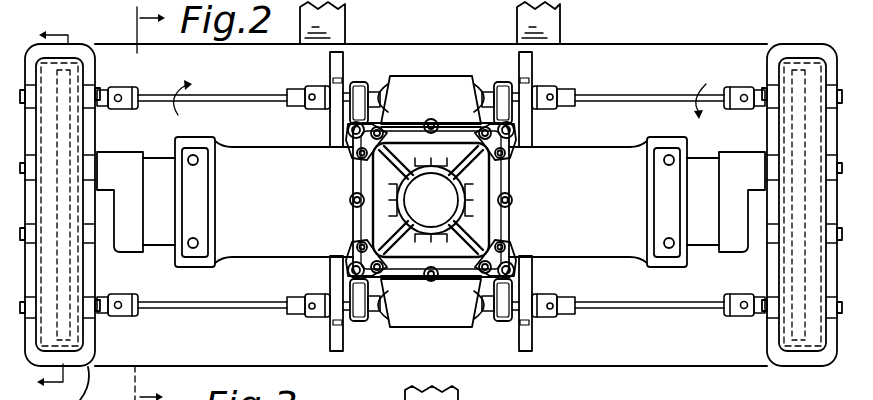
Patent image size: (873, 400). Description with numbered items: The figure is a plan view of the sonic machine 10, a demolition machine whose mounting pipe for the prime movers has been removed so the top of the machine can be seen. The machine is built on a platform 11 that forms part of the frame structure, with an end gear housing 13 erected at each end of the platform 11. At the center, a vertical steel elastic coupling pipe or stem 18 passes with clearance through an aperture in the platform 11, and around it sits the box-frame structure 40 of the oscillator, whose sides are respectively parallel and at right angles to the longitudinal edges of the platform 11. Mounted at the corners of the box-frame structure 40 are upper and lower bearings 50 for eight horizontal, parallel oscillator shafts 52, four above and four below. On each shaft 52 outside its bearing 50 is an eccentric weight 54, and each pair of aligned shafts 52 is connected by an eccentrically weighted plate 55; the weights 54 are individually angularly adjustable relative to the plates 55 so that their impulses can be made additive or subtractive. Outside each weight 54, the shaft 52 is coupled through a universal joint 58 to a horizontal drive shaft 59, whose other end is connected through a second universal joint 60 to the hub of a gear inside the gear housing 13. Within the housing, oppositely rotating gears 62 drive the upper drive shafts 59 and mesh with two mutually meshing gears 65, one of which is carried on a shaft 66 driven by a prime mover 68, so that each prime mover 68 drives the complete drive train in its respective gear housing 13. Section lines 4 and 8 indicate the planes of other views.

The section line 4- 4 is at (139, 203).
The section line 8- 8 is at (45, 207).
The sonic machine 10 is at (659, 371).
The platform 11 is at (556, 370).
The end gear housing 13 is at (773, 342).
The elastic coupling pipe or stem 18 is at (418, 184).
The box-frame structure 40 is at (518, 160).
The bearing 50 is at (359, 84).
The oscillator shaft 52 is at (382, 90).
The eccentric weight 54 is at (340, 58).
The eccentrically weighted plate 55 is at (441, 73).
The universal joint 58 is at (298, 108).
The drive shaft 59 is at (214, 93).
The second universal joint 60 is at (115, 88).
The gear 62 is at (78, 282).
The gear 65 is at (98, 118).
The drive shaft of prime mover 66 is at (98, 165).
The prime mover 68 is at (262, 193).